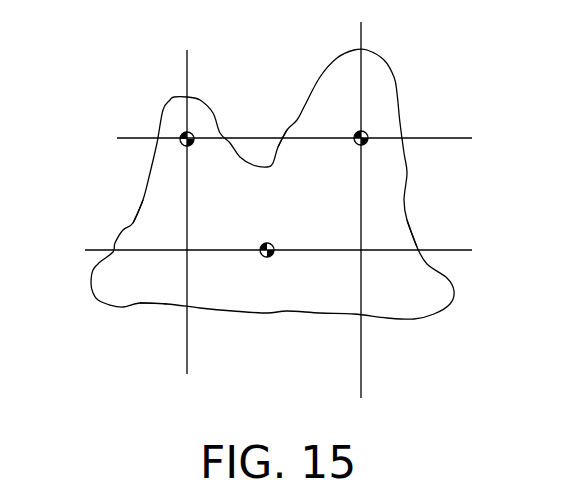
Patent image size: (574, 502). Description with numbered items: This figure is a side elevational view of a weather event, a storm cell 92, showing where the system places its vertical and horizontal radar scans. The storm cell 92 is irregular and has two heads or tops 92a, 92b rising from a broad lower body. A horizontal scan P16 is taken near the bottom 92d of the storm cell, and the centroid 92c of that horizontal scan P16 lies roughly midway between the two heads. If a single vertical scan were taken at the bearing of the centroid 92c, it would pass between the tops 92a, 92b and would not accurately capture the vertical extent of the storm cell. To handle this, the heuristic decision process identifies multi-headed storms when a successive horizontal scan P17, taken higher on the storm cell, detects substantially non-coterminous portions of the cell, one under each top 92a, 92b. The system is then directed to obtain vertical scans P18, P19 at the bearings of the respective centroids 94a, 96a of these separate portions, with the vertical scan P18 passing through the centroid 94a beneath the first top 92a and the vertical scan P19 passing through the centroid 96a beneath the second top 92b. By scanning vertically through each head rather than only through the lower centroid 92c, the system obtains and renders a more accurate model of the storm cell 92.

The storm cell 92 is at (130, 202).
The top of storm cell 92a is at (173, 97).
The top of storm cell 92b is at (370, 52).
The centroid of horizontal scan 92c is at (267, 257).
The bottom of storm cell 92d is at (113, 297).
The centroid of non-coterminous portion 94a is at (189, 146).
The centroid of non-coterminous portion 96a is at (365, 144).
The horizontal scan P16 is at (430, 250).
The successive horizontal scan P17 is at (430, 137).
The vertical scan P18 is at (187, 331).
The vertical scan P19 is at (362, 378).